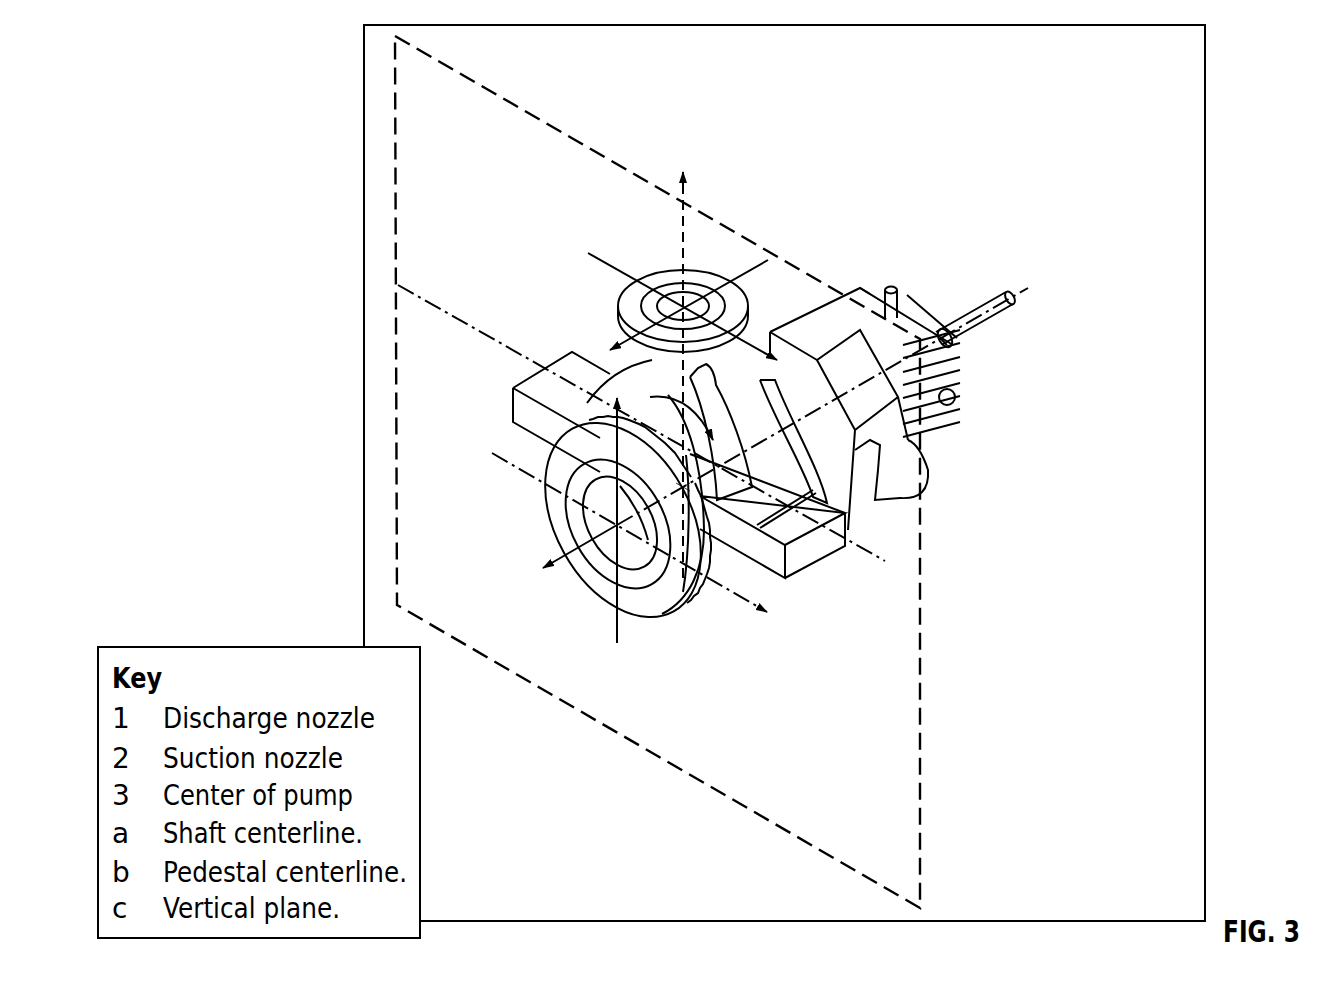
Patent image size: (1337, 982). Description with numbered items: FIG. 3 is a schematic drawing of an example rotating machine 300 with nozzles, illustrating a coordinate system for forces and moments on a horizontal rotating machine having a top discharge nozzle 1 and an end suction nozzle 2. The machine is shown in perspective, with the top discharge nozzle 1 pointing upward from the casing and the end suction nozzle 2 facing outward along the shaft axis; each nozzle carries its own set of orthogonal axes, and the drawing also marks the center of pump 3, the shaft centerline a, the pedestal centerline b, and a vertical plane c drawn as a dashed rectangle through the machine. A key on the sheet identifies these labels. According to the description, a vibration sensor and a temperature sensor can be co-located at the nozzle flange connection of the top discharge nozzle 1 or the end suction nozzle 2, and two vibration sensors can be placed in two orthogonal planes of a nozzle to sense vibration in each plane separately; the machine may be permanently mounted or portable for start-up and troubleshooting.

The pump installation view 300 is at (178, 67).
The top discharge nozzle 1 is at (691, 359).
The end suction nozzle 2 is at (642, 510).
The center of pump 3 is at (687, 474).
The shaft centerline a is at (827, 391).
The pedestal centerline b is at (656, 431).
The vertical plane c is at (657, 472).